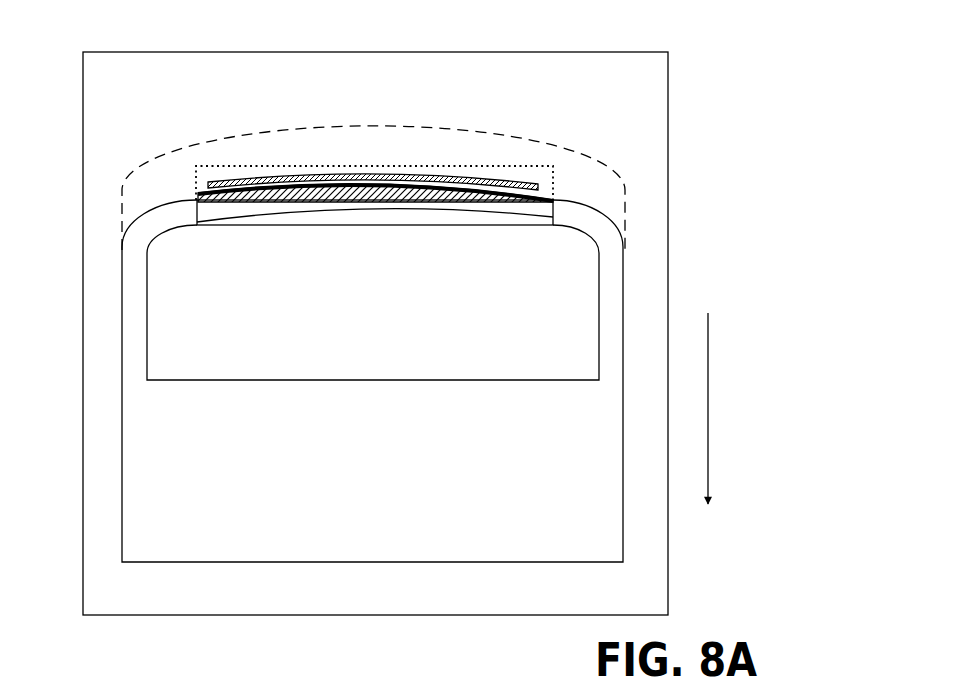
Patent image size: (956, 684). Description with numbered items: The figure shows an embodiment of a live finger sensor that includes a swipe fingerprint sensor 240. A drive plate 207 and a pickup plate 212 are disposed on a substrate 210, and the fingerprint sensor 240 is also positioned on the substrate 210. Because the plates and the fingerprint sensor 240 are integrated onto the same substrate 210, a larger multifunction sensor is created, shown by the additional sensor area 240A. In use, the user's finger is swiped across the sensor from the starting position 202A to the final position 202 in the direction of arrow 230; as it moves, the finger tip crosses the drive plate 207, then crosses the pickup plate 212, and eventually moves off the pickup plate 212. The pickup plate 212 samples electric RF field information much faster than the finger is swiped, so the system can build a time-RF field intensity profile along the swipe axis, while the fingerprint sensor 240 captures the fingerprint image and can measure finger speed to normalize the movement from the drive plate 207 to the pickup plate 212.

The substrate 210 is at (672, 110).
The finger position 202 is at (119, 367).
The finger starting position 202A is at (117, 191).
The fingerprint sensor 240 is at (557, 221).
The additional sensor area 240A is at (560, 183).
The drive plate 207 is at (371, 170).
The pickup plate 212 is at (302, 184).
The swipe direction arrow 230 is at (729, 408).